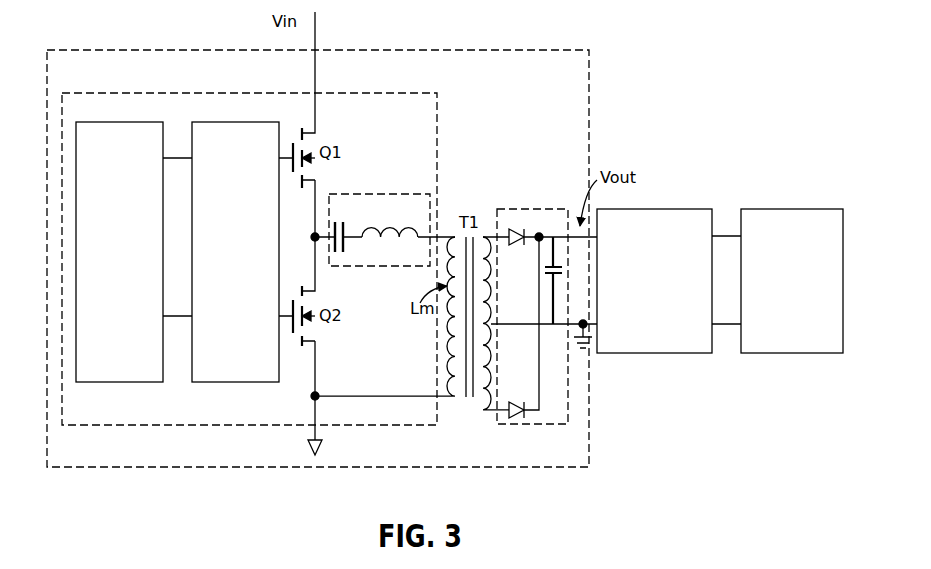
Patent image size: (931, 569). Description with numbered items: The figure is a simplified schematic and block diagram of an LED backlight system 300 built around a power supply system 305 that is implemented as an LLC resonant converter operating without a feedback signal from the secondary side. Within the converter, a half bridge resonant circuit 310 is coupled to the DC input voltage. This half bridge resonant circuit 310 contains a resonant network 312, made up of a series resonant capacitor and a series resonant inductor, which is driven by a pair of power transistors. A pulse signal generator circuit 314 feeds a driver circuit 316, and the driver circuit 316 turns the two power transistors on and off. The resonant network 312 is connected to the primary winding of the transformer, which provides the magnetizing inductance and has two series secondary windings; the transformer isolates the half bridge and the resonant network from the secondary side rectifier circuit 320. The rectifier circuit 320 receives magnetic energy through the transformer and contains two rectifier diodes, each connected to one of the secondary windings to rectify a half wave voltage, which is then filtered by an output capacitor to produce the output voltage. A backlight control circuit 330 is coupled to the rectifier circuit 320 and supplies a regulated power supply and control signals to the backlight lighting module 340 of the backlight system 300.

The LED backlight system 300 is at (637, 62).
The power supply system 305 is at (446, 46).
The half bridge resonant circuit 310 is at (182, 93).
The resonant network 312 is at (385, 222).
The pulse signal generator circuit 314 is at (119, 252).
The driver circuit 316 is at (235, 252).
The secondary side rectifier circuit 320 is at (547, 306).
The backlight control circuit 330 is at (654, 271).
The backlight lighting module 340 is at (792, 271).